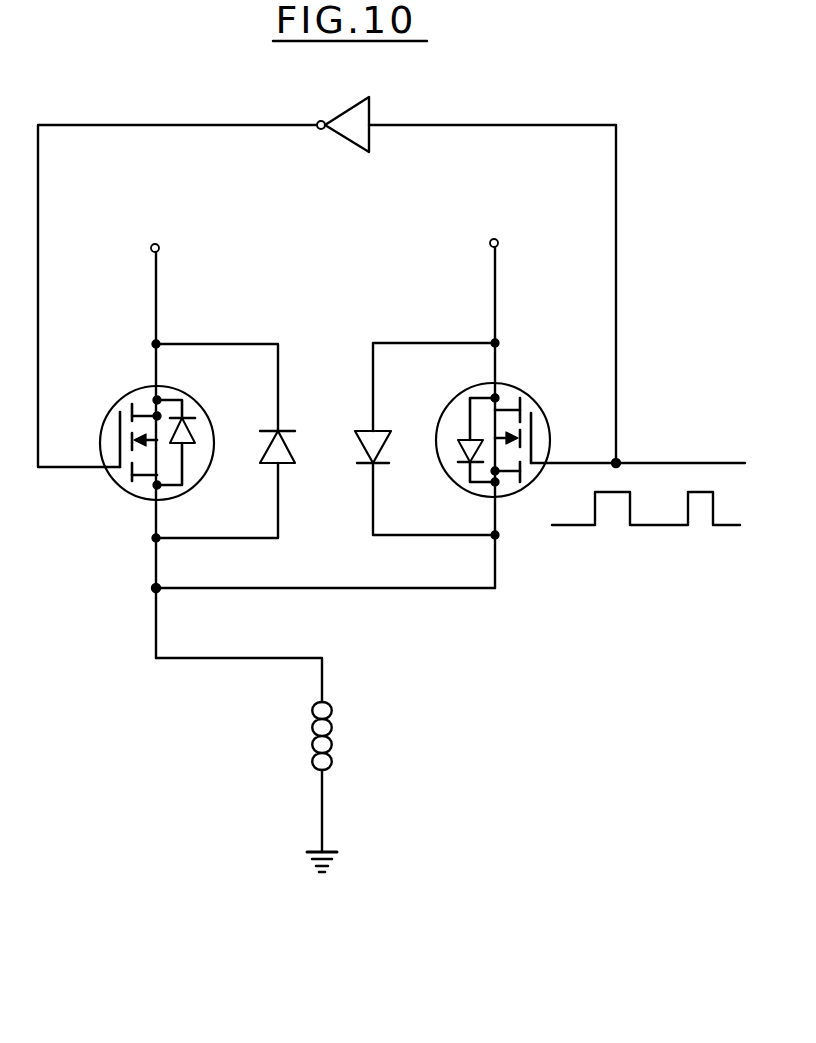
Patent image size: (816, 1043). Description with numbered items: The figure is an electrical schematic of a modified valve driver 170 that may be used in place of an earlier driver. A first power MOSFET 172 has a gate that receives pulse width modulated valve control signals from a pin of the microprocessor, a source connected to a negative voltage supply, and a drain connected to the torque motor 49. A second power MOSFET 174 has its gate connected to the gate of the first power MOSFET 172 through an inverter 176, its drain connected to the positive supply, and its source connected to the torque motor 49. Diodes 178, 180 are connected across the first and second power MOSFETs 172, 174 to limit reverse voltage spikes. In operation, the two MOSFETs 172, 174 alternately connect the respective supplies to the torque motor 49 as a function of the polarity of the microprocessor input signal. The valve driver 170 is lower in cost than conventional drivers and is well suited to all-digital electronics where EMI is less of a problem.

The valve driver 170 is at (500, 112).
The first power MOSFET 172 is at (540, 406).
The second power MOSFET 174 is at (112, 405).
The inverter 176 is at (342, 118).
The diode 178 is at (370, 430).
The diode 180 is at (283, 465).
The torque motor 49 is at (376, 787).